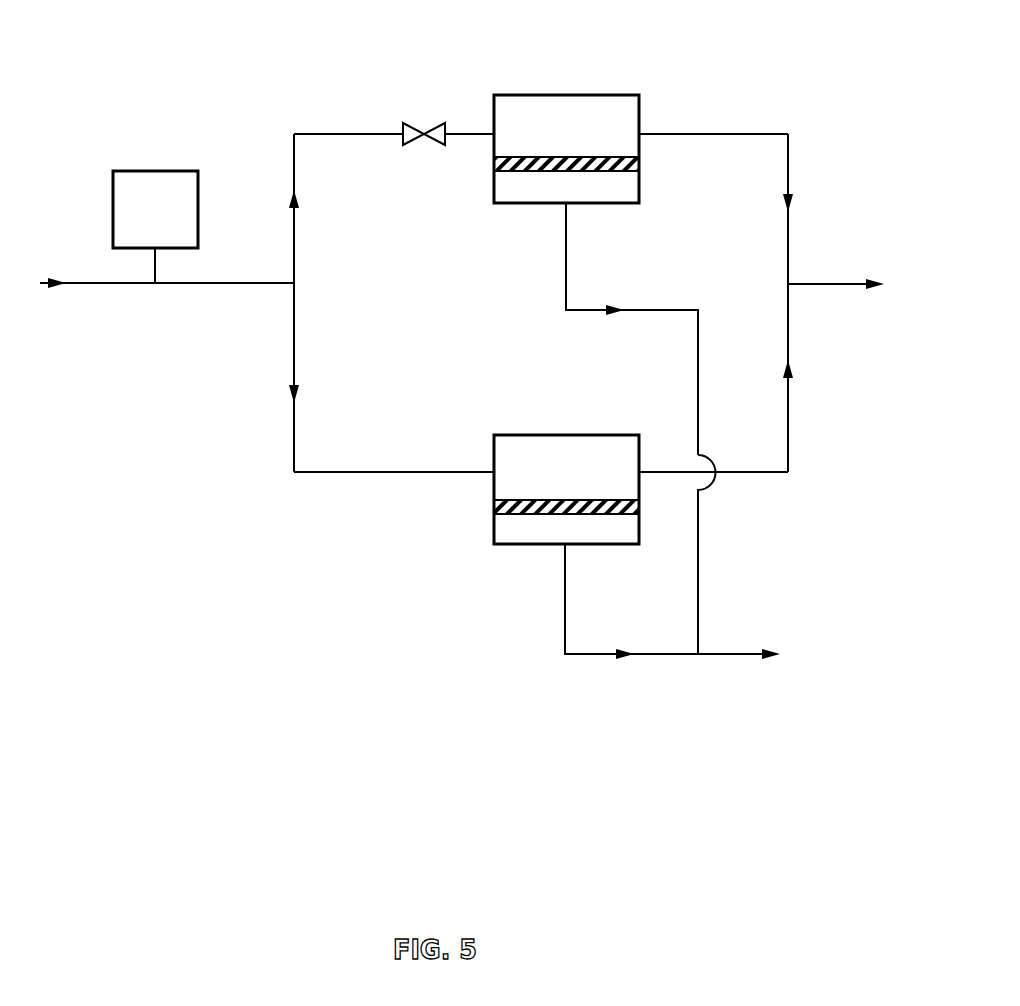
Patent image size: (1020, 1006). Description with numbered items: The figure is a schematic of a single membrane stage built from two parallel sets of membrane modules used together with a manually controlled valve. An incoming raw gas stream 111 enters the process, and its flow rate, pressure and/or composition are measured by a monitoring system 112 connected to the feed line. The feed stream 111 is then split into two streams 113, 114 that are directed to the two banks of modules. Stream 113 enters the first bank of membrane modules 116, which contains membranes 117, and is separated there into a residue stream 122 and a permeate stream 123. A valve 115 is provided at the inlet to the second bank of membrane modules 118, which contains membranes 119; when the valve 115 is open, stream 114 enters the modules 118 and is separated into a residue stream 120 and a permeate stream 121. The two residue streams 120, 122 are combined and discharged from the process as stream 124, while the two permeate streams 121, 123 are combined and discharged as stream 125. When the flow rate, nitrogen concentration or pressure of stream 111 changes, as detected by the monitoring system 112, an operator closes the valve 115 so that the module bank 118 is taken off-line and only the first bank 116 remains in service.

The incoming raw gas stream 111 is at (165, 299).
The monitoring system 112 is at (173, 171).
The stream to first bank 113 is at (391, 444).
The stream to second bank 114 is at (391, 158).
The valve 115 is at (418, 123).
The first bank of membrane modules 116 is at (520, 546).
The membranes 117 is at (494, 505).
The second bank of membrane modules 118 is at (593, 93).
The membranes 119 is at (641, 164).
The residue stream 120 is at (736, 209).
The permeate stream 121 is at (632, 329).
The residue stream 122 is at (736, 378).
The permeate stream 123 is at (631, 616).
The combined residue stream 124 is at (858, 284).
The combined permeate stream 125 is at (763, 653).